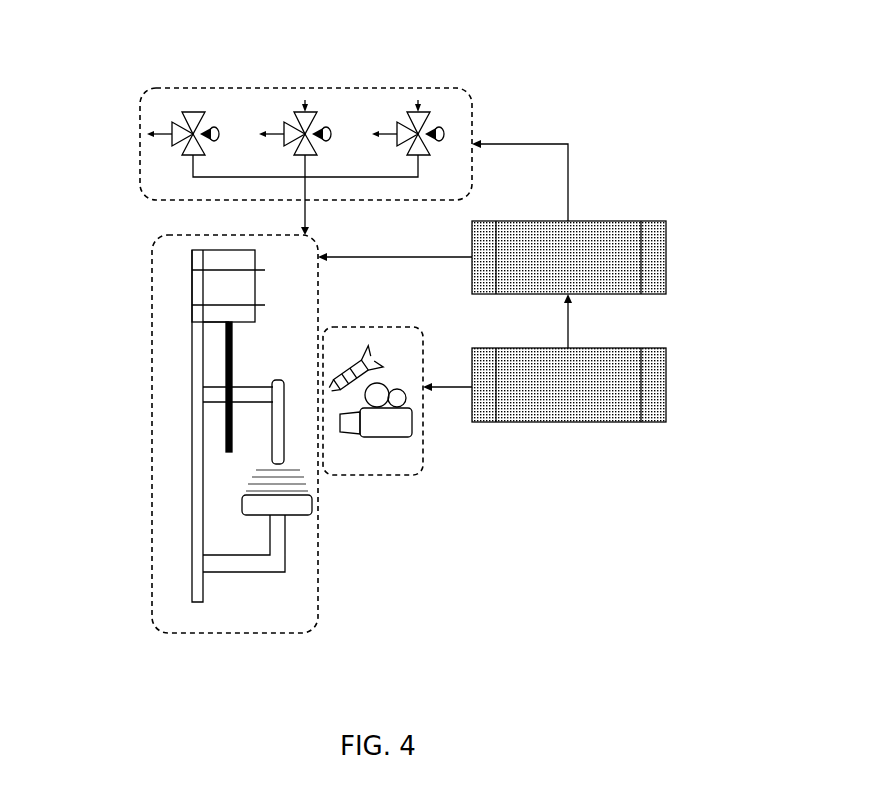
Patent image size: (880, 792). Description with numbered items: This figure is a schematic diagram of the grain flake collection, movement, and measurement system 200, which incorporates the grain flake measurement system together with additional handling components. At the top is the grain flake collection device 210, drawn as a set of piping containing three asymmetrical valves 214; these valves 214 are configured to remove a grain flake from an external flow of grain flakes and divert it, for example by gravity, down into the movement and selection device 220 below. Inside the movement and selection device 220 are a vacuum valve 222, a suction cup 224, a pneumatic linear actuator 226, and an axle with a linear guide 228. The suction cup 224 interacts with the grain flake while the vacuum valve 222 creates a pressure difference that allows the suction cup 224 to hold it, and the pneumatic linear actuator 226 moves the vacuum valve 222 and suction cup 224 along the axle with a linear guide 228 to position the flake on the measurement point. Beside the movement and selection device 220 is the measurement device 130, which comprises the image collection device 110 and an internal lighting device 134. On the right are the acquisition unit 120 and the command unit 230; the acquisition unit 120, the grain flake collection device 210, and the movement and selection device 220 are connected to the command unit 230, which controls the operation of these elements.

The grain flake collection, movement, and measurement system 200 is at (656, 125).
The grain flake collection device 210 is at (257, 136).
The valve 214 is at (392, 118).
The movement and selection device 220 is at (180, 434).
The vacuum valve 222 is at (275, 425).
The suction cup 224 is at (283, 465).
The pneumatic linear actuator 226 is at (218, 277).
The axle with a linear guide 228 is at (230, 390).
The command unit 230 is at (628, 268).
The acquisition unit 120 is at (572, 405).
The measurement device 130 is at (417, 433).
The image collection device 110 is at (393, 430).
The internal lighting device 134 is at (362, 362).